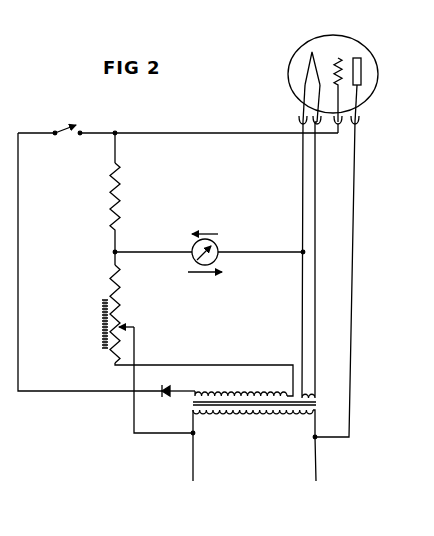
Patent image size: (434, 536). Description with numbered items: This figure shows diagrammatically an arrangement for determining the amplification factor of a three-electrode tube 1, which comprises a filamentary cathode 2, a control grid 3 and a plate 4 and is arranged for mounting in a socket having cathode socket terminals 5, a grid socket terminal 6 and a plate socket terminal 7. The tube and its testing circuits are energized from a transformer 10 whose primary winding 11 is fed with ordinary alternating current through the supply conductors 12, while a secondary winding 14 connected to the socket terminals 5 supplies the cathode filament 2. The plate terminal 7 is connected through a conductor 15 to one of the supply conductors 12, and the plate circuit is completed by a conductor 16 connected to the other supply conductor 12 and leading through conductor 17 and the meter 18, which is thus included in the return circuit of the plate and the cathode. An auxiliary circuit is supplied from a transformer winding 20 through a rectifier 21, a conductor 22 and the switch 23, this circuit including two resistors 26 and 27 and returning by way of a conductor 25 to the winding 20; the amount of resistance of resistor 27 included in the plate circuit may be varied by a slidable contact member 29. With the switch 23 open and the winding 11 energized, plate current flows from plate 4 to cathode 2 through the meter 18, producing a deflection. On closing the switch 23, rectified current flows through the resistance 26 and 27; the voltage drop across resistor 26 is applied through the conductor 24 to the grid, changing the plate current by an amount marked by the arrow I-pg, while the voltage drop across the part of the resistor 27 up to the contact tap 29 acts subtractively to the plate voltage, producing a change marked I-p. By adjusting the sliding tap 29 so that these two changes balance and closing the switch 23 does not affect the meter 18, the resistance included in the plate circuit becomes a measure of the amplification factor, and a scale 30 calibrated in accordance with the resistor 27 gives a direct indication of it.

The tube 1 is at (371, 78).
The filamentary cathode 2 is at (305, 78).
The control grid 3 is at (342, 60).
The plate 4 is at (362, 70).
The cathode socket terminals 5 is at (310, 126).
The grid socket terminal 6 is at (340, 124).
The plate socket terminal 7 is at (358, 124).
The transformer 10 is at (263, 405).
The primary winding 11 is at (262, 417).
The conductors 12 is at (316, 461).
The secondary winding 14 is at (316, 392).
The conductor 15 is at (350, 421).
The conductor 16 is at (135, 412).
The conductor 17 is at (165, 242).
The meter 18 is at (197, 262).
The secondary transformer winding 20 is at (224, 392).
The rectifier 21 is at (166, 389).
The conductor 22 is at (18, 282).
The switch 23 is at (72, 127).
The conductor 24 is at (193, 131).
The conductor 25 is at (259, 358).
The resistance 26 is at (121, 180).
The resistor 27 is at (121, 282).
The slidable contact member 29 is at (130, 326).
The scale 30 is at (102, 322).